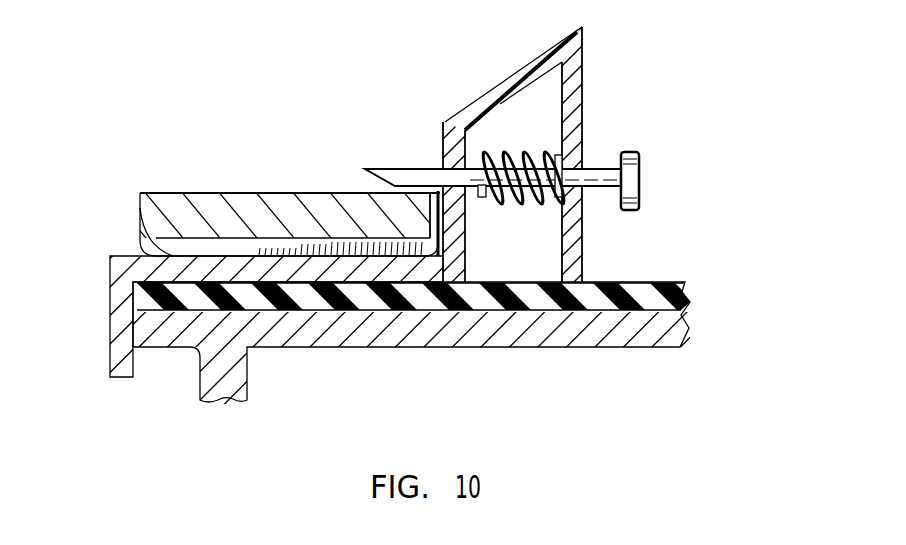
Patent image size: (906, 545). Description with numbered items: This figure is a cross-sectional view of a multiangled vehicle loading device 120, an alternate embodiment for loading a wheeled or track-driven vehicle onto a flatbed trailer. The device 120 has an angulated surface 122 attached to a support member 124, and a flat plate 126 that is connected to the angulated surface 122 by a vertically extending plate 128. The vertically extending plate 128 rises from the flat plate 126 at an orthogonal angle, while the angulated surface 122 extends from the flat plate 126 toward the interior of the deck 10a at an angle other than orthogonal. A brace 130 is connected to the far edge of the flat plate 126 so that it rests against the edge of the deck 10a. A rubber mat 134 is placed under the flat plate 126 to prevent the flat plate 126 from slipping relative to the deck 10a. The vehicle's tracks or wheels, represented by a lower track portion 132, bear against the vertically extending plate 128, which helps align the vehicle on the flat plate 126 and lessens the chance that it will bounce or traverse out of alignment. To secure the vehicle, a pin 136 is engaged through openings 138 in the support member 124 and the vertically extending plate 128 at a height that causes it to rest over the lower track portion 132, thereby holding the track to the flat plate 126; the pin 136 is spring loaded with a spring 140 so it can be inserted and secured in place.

The deck 10a is at (660, 332).
The multiangled vehicle loading device 120 is at (697, 168).
The angulated surface 122 is at (498, 83).
The support member 124 is at (588, 72).
The flat plate 126 is at (173, 252).
The vertically extending plate 128 is at (443, 138).
The brace 130 is at (110, 283).
The lower track portion 132 is at (208, 195).
The rubber mat 134 is at (690, 295).
The pin 136 is at (595, 173).
The openings 138 is at (475, 193).
The spring 140 is at (496, 155).